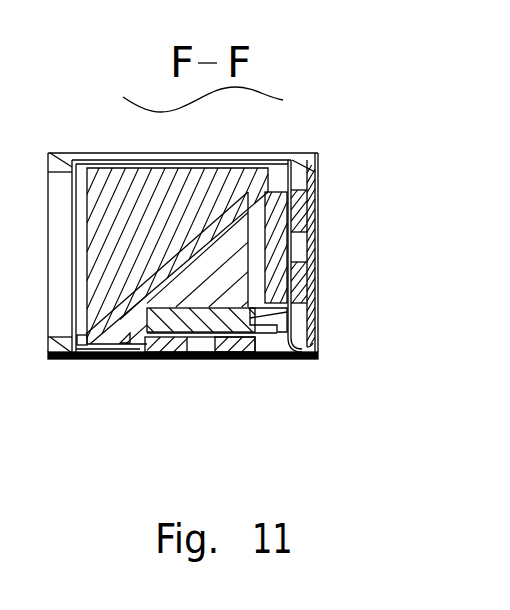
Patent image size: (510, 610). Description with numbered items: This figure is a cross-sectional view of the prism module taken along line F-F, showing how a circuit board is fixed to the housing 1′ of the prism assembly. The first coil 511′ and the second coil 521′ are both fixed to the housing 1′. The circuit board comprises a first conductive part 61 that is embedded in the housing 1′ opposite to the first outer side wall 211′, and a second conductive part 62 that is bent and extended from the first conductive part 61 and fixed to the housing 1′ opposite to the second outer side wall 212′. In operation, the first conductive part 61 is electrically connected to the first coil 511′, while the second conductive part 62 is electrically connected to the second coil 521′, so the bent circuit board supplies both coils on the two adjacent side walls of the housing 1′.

The housing 1′ is at (298, 173).
The second coil 521′ is at (297, 228).
The second conductive part 62 is at (310, 247).
The second outer side wall 212′ is at (280, 312).
The first outer side wall 211′ is at (140, 327).
The first conductive part 61 is at (209, 352).
The first coil 511′ is at (272, 355).